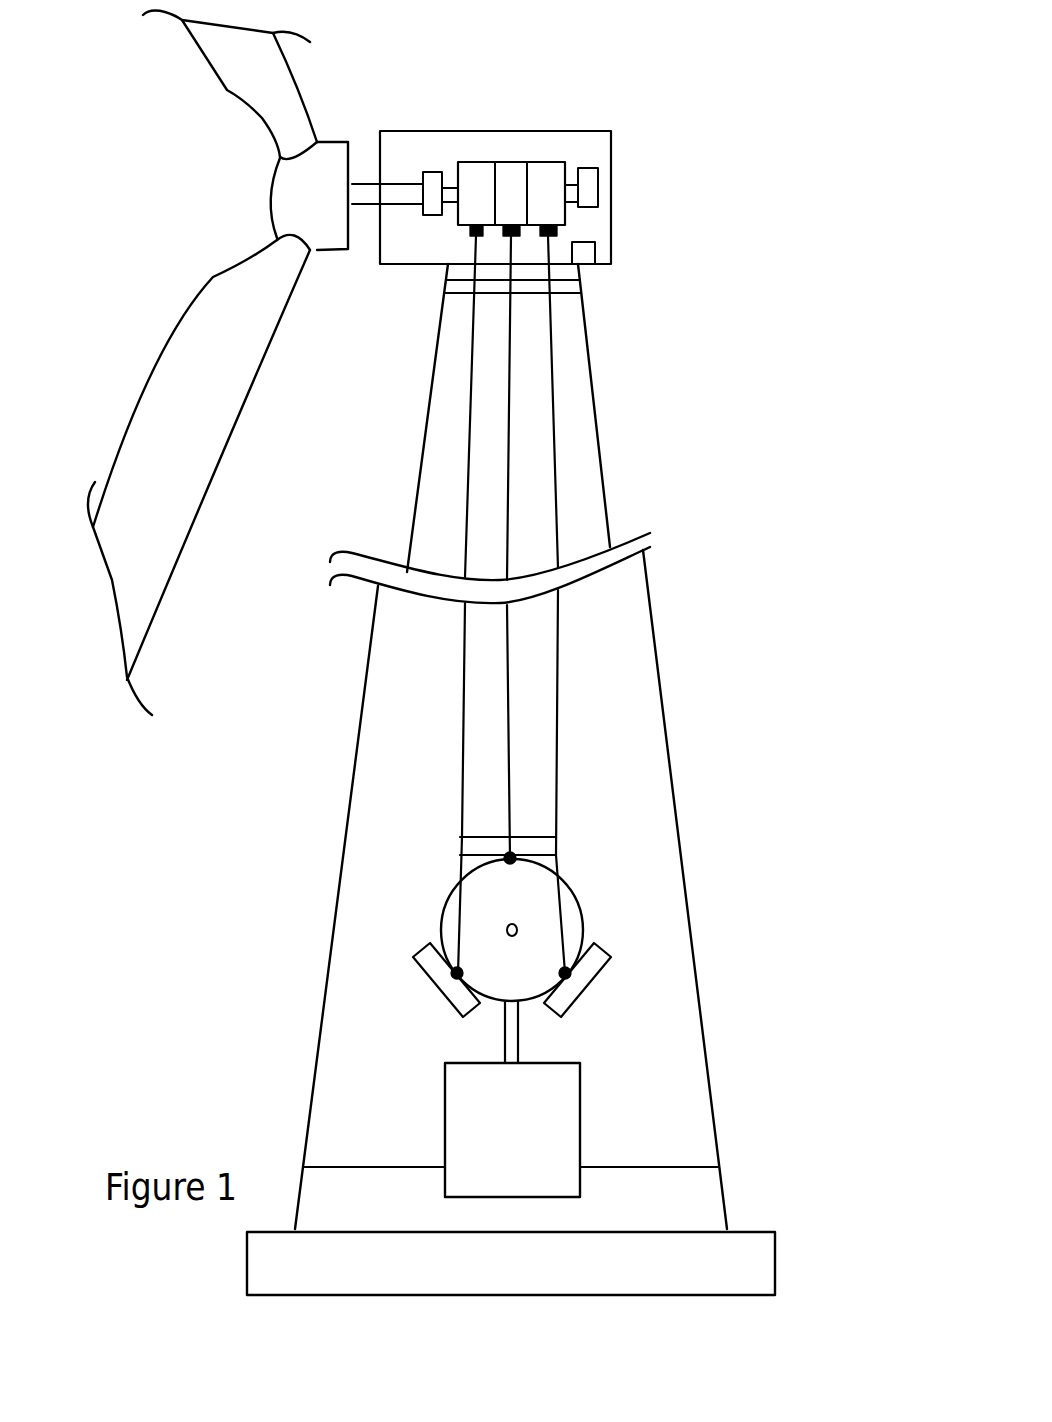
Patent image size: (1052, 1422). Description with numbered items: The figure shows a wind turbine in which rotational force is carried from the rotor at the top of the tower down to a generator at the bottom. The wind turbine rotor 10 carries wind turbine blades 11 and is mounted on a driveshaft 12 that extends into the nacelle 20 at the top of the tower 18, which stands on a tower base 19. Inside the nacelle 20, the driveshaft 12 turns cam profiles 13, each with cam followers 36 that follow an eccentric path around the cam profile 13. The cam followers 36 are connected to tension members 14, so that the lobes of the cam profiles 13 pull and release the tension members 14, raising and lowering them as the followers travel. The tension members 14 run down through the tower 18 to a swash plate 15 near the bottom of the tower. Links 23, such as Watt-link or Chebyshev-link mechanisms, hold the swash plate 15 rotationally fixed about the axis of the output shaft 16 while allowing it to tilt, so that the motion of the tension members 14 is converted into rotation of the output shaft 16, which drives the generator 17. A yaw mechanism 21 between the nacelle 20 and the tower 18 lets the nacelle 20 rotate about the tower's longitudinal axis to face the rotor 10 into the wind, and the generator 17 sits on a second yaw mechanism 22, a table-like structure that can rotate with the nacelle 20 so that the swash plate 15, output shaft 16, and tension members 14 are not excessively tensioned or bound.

The wind turbine rotor 10 is at (267, 177).
The wind turbine blades 11 is at (197, 50).
The driveshaft 12 is at (367, 207).
The cam profiles 13 is at (553, 160).
The tension members 14 is at (472, 395).
The swash plate 15 is at (573, 892).
The output shaft 16 is at (520, 1042).
The generator 17 is at (582, 1118).
The tower 18 is at (595, 450).
The tower base 19 is at (776, 1259).
The nacelle 20 is at (575, 130).
The yaw mechanism 21 is at (576, 280).
The yaw mechanism 22 is at (720, 1167).
The links 23 is at (428, 978).
The cam followers 36 is at (560, 226).